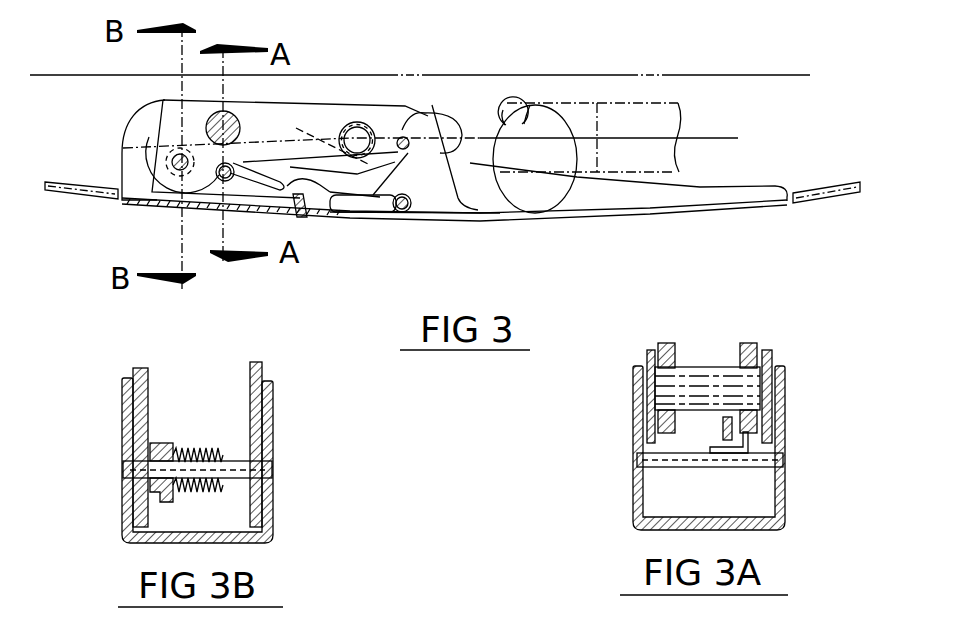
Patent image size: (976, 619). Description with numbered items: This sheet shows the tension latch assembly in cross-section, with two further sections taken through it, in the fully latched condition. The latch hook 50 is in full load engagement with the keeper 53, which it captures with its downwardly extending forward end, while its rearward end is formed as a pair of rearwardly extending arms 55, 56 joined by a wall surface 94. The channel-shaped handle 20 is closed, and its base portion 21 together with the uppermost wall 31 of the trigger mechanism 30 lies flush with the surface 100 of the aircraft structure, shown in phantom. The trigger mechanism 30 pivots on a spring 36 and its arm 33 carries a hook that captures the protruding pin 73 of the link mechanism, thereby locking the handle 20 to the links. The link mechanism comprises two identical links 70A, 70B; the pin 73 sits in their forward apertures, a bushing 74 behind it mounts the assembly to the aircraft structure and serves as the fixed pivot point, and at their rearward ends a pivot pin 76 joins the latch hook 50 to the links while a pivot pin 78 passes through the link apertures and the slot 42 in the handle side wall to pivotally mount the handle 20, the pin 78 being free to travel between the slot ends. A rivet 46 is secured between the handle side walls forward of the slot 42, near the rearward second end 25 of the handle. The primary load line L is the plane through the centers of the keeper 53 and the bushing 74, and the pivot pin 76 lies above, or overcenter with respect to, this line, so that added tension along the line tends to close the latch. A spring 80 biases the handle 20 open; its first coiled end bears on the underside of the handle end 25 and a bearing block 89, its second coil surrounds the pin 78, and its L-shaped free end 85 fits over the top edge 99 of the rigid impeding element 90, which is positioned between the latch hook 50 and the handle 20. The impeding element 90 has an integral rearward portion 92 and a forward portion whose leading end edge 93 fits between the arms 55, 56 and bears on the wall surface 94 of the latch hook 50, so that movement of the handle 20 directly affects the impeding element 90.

In FIG. 3, the handle 20 is at (650, 232).
In FIG. 3, the base portion 21 is at (701, 212).
In FIG. 3B, the rearward second end 25 is at (124, 546).
In FIG. 3A, the rearward second end 25 is at (634, 530).
In FIG. 3, the trigger mechanism 30 is at (427, 224).
In FIG. 3, the uppermost wall 31 is at (454, 214).
In FIG. 3, the arm 33 is at (432, 102).
In FIG. 3, the spring 36 is at (383, 224).
In FIG. 3, the slot 42 is at (190, 146).
In FIG. 3, the rivet 46 is at (228, 180).
In FIG. 3A, the rivet 46 is at (655, 468).
In FIG. 3, the latch hook 50 is at (562, 210).
In FIG. 3, the keeper 53 is at (505, 118).
In FIG. 3A, the rearwardly extending arm 55 is at (762, 341).
In FIG. 3A, the rearwardly extending arm 56 is at (652, 346).
In FIG. 3B, the link 70A is at (270, 370).
In FIG. 3A, the link 70A is at (642, 360).
In FIG. 3B, the link 70B is at (126, 370).
In FIG. 3A, the link 70B is at (778, 351).
In FIG. 3, the pin 73 is at (410, 144).
In FIG. 3, the bushing 74 is at (366, 124).
In FIG. 3, the pivot pin 76 is at (232, 118).
In FIG. 3A, the pivot pin 76 is at (708, 362).
In FIG. 3, the pivot pin 78 is at (170, 174).
In FIG. 3B, the pivot pin 78 is at (240, 482).
In FIG. 3B, the spring 80 is at (200, 440).
In FIG. 3A, the free end 85 is at (743, 455).
In FIG. 3, the bearing block 89 is at (307, 217).
In FIG. 3B, the impeding element 90 is at (162, 438).
In FIG. 3A, the impeding element 90 is at (740, 423).
In FIG. 3, the rearward portion 92 is at (118, 147).
In FIG. 3, the leading end edge 93 is at (338, 222).
In FIG. 3A, the wall surface 94 is at (697, 428).
In FIG. 3, the top edge 99 is at (267, 212).
In FIG. 3, the surface 100 is at (825, 196).
In FIG. 3, the primary load line L is at (708, 138).